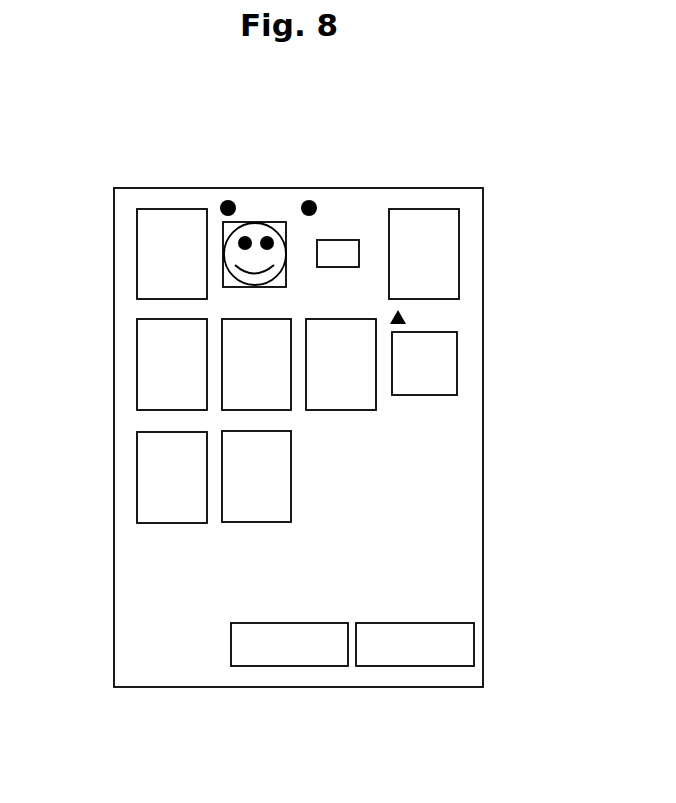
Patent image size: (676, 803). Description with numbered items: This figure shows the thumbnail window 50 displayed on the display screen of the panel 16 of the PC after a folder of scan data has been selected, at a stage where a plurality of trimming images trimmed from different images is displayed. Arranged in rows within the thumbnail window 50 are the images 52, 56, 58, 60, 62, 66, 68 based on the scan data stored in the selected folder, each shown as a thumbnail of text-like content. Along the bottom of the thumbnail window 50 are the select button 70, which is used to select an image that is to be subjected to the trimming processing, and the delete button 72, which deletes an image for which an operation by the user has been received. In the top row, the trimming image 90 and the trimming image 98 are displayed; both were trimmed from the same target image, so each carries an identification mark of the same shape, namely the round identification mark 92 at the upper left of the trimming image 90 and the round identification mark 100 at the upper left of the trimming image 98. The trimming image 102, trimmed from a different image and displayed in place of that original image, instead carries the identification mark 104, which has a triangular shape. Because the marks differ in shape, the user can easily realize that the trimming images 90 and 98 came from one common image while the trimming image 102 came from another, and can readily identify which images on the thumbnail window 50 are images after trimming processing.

The panel 16 is at (430, 148).
The thumbnail window 50 is at (182, 187).
The image 52 is at (137, 236).
The image 56 is at (460, 232).
The image 58 is at (137, 377).
The image 60 is at (237, 319).
The image 62 is at (350, 410).
The image 66 is at (137, 465).
The image 68 is at (237, 522).
The select button 70 is at (298, 666).
The delete button 72 is at (415, 666).
The trimming image 90 is at (275, 222).
The identification mark 92 is at (226, 200).
The trimming image 98 is at (344, 240).
The identification mark 100 is at (309, 208).
The trimming image 102 is at (455, 356).
The identification mark 104 is at (403, 314).